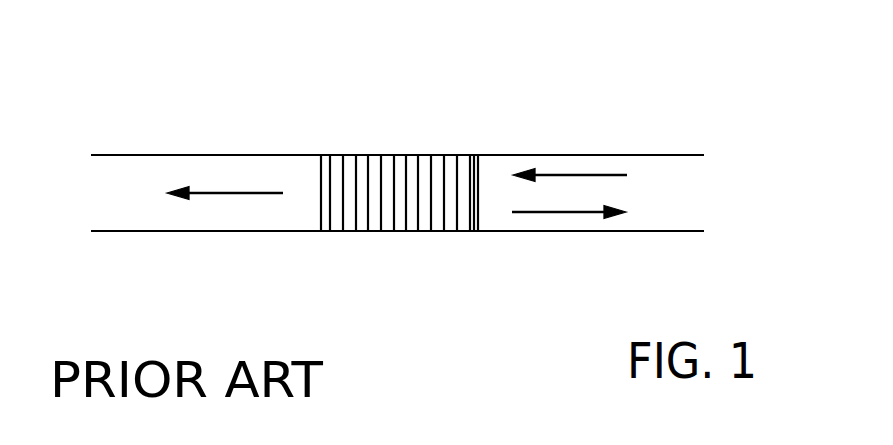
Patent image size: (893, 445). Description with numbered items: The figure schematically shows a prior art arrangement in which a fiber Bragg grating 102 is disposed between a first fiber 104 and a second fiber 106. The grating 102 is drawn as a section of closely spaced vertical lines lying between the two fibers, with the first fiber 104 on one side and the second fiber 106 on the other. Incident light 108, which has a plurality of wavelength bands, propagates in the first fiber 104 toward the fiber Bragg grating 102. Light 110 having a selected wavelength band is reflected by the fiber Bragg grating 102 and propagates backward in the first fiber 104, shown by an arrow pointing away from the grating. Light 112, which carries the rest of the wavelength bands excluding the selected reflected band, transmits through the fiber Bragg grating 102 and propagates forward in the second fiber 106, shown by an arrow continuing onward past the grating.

The fiber Bragg grating 102 is at (388, 153).
The first fiber 104 is at (515, 154).
The second fiber 106 is at (150, 154).
The incident light 108 is at (569, 172).
The reflected light 110 is at (590, 213).
The transmitted light 112 is at (223, 192).